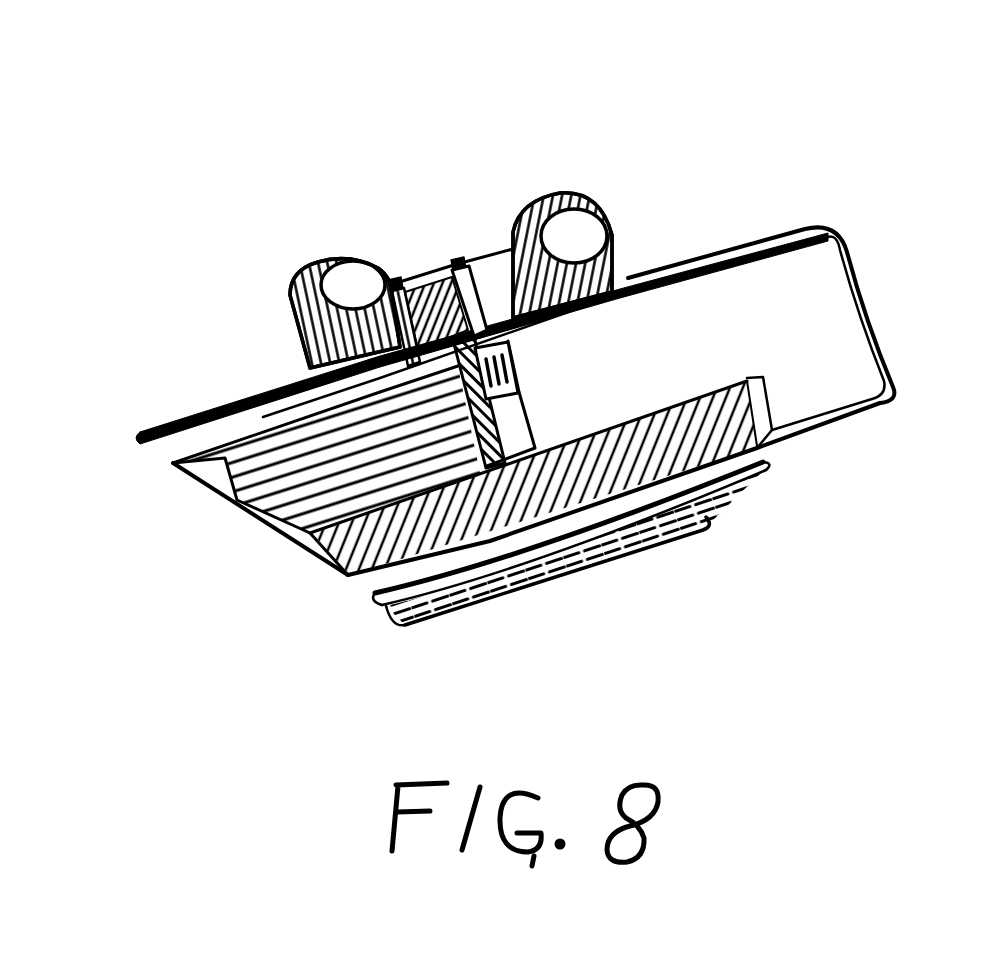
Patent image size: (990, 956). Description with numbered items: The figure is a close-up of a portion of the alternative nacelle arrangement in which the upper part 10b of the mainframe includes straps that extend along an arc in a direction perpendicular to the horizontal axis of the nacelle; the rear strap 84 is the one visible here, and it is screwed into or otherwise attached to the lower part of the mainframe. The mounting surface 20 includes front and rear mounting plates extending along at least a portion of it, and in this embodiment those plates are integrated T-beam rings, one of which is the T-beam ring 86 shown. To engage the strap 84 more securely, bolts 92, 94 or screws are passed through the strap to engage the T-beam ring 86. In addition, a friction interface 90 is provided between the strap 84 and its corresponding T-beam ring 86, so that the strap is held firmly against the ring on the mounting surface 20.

The upper part of the mainframe 10b is at (745, 102).
The mounting surface 20 is at (797, 231).
The rear strap 84 is at (568, 196).
The T-beam ring 86 is at (518, 393).
The friction interface 90 is at (626, 284).
The bolt 92 is at (395, 279).
The bolt 94 is at (463, 257).